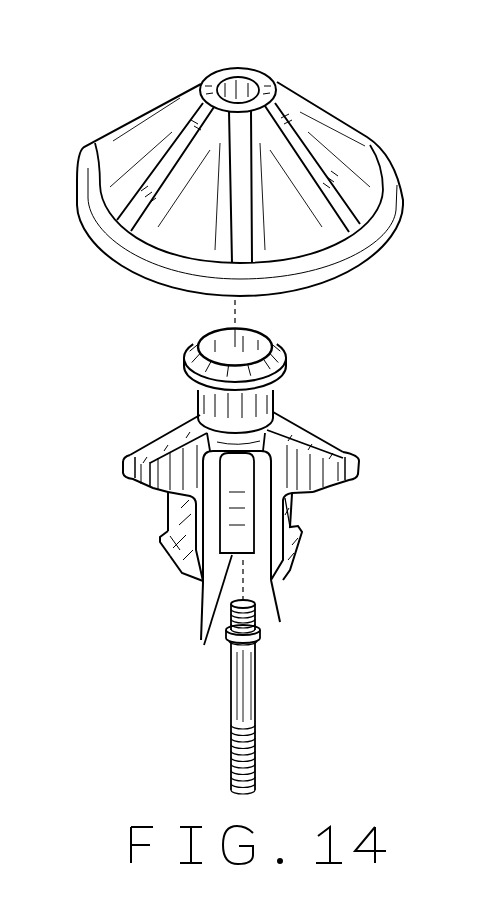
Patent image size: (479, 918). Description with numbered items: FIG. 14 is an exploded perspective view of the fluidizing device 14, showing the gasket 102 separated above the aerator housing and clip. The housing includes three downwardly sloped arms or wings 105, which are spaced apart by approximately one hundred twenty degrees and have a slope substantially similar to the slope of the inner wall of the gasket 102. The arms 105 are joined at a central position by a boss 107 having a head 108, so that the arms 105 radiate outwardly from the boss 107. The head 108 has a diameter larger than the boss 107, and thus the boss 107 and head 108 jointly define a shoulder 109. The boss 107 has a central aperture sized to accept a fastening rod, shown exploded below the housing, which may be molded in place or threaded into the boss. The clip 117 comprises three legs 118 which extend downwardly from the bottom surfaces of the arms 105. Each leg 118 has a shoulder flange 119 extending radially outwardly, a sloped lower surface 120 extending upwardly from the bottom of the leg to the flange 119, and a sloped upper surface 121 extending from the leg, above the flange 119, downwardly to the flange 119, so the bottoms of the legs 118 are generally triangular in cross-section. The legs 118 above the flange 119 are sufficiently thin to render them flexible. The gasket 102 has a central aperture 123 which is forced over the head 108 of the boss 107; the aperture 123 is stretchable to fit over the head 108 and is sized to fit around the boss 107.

The clip fastener 14 is at (332, 412).
The gasket 102 is at (363, 110).
The arms 105 is at (155, 432).
The boss 107 is at (278, 391).
The head 108 is at (281, 350).
The shoulder 109 is at (193, 391).
The clip 117 is at (308, 563).
The legs 118 is at (201, 640).
The shoulder flange 119 is at (160, 541).
The sloped lower surface 120 is at (178, 566).
The sloped upper surface 121 is at (163, 535).
The central aperture 123 is at (238, 84).